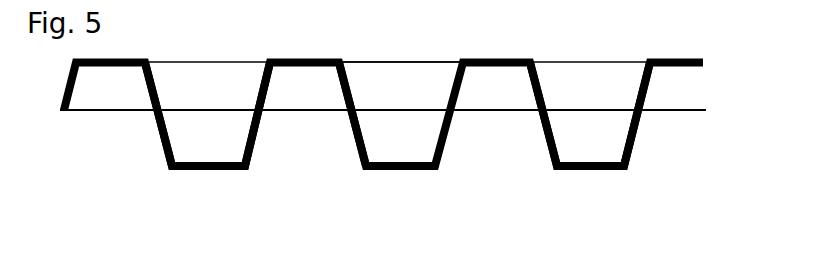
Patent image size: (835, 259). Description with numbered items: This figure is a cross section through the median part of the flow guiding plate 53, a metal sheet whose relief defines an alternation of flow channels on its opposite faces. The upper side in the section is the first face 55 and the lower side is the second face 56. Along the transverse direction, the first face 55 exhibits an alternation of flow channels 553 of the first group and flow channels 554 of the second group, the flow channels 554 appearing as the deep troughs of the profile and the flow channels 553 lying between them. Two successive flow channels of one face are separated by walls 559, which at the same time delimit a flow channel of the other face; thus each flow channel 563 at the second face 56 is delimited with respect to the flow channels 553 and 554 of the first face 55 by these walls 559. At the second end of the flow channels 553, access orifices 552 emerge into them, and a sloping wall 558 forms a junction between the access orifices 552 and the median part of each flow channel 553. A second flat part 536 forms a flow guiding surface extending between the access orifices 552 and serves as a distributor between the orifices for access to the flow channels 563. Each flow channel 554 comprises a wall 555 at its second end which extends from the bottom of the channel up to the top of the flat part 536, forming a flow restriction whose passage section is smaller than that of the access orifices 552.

The flow guiding plate 53 is at (672, 177).
The first face 55 is at (295, 60).
The second face 56 is at (205, 170).
The second flat part 536 is at (707, 108).
The access orifices 552 is at (433, 90).
The flow channels of the first group 553 is at (382, 95).
The flow channels of the second group 554 is at (187, 130).
The wall 555 is at (203, 60).
The sloping wall 558 is at (382, 150).
The walls 559 is at (353, 90).
The flow channels of the second face 563 is at (284, 150).